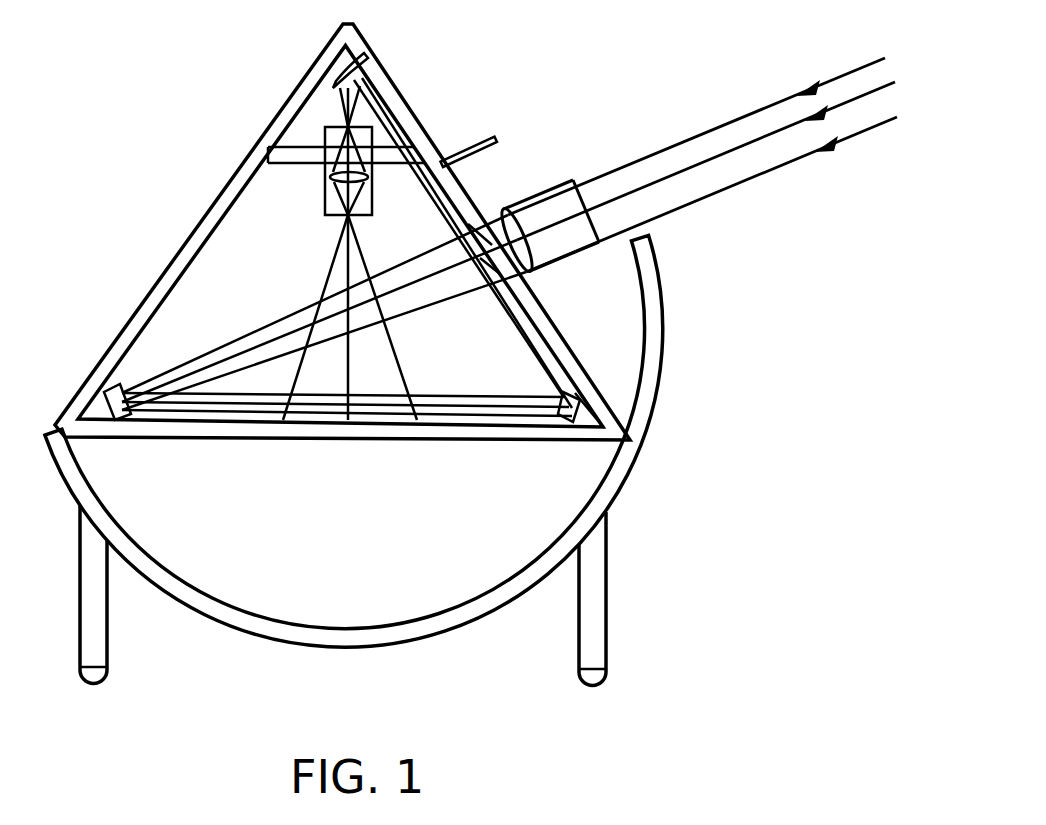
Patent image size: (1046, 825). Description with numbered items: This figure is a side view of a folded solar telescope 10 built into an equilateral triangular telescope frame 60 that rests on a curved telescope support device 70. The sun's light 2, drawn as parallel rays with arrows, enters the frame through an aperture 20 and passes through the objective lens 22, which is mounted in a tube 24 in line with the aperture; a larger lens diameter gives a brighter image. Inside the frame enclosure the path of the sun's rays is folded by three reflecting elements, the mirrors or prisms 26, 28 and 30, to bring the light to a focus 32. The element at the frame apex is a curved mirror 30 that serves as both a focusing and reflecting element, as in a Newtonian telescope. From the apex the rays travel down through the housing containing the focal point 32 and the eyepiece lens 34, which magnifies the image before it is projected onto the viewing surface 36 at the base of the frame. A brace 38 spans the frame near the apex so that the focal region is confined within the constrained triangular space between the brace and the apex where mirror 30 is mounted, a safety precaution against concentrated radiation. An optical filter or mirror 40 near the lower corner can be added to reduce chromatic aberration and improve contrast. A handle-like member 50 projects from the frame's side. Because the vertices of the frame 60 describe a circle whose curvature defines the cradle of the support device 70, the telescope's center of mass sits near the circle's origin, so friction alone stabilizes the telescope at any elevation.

The sun's light 2 is at (891, 82).
The folded solar telescope 10 is at (197, 179).
The aperture 20 is at (530, 283).
The objective lens 22 is at (505, 213).
The tube 24 is at (632, 250).
The mirror or prism 26 is at (120, 410).
The mirror or prism 28 is at (570, 420).
The curved mirror 30 is at (348, 52).
The focus 32 is at (342, 125).
The eyepiece lens 34 is at (375, 181).
The viewing surface 36 is at (327, 418).
The brace 38 is at (290, 165).
The optical filter 40 is at (573, 390).
The handle 50 is at (497, 140).
The telescope frame 60 is at (152, 293).
The telescope support device 70 is at (618, 503).